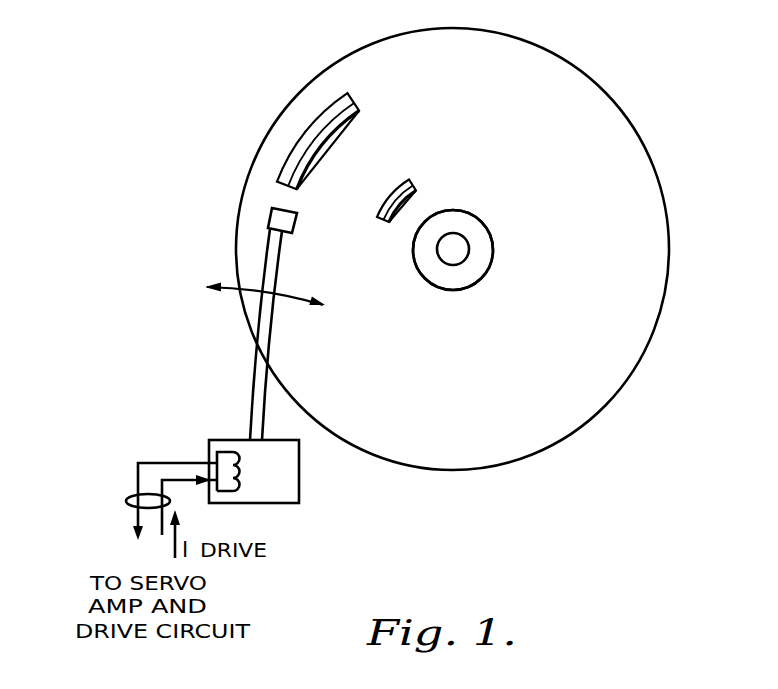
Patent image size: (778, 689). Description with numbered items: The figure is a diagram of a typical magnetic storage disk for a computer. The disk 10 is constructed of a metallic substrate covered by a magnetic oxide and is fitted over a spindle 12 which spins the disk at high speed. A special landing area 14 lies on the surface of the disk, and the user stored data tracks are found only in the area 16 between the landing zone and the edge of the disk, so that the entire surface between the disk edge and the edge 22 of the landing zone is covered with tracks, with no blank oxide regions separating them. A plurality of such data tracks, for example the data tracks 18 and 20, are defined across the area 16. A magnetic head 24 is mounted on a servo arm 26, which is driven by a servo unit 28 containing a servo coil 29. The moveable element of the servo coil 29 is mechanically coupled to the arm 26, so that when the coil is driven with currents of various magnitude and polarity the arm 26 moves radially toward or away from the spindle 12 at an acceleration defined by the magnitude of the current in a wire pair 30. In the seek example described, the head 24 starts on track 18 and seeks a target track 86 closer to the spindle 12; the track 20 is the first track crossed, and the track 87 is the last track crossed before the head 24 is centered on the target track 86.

The disk 10 is at (670, 220).
The spindle 12 is at (468, 253).
The landing area 14 is at (487, 227).
The area 16 is at (575, 87).
The data track 18 is at (355, 106).
The data track 20 is at (345, 123).
The edge of the landing zone 22 is at (457, 208).
The magnetic head 24 is at (272, 218).
The servo arm 26 is at (254, 355).
The servo unit 28 is at (278, 505).
The servo coil 29 is at (245, 480).
The wire pair 30 is at (127, 503).
The target track 86 is at (405, 222).
The track 87 is at (393, 224).